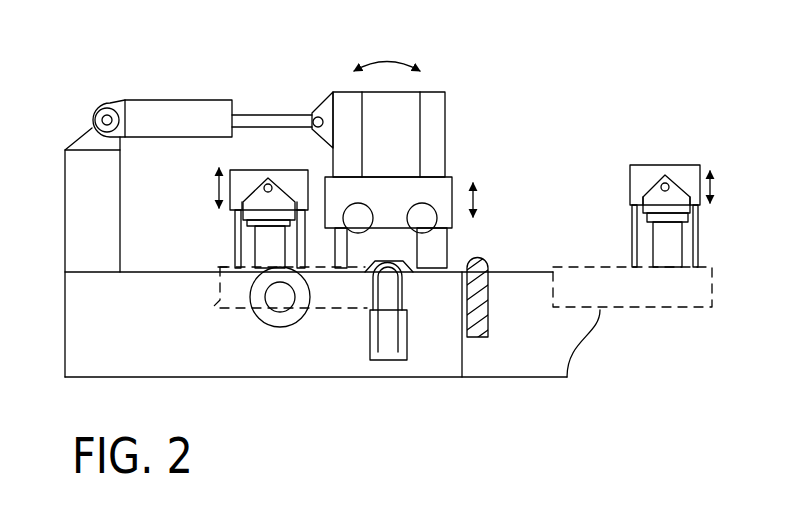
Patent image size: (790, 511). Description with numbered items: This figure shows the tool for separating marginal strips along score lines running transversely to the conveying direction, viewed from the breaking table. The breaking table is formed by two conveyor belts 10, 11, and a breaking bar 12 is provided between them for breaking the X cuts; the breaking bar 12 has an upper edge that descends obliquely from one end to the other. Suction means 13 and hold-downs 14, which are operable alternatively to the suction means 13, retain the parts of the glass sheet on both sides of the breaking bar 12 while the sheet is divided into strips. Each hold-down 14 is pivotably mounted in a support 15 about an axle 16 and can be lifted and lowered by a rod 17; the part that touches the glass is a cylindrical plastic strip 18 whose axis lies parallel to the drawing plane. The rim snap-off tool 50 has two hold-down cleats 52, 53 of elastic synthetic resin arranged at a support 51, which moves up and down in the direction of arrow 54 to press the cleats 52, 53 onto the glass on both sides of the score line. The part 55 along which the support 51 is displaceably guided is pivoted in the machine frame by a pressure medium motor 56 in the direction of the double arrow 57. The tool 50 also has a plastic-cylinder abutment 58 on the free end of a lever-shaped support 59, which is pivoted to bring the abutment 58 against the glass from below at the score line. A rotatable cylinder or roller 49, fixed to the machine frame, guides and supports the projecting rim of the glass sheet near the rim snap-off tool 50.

The conveyor belt 10 is at (75, 310).
The conveyor belt 11 is at (567, 376).
The breaking bar 12 is at (480, 340).
The suction means 13 is at (213, 300).
The hold-down 14 is at (248, 205).
The support 15 is at (228, 182).
The axle 16 is at (266, 183).
The rod 17 is at (240, 250).
The cylindrical plastic strip 18 is at (688, 222).
The rotatable cylinder or roller 49 is at (270, 326).
The rim snap-off tool 50 is at (439, 78).
The support 51 is at (440, 187).
The hold-down cleat 52 is at (357, 235).
The hold-down cleat 53 is at (431, 230).
The arrow 54 is at (477, 202).
The part of the rim snap-off tool 55 is at (373, 130).
The pressure medium motor 56 is at (191, 100).
The double arrow 57 is at (387, 60).
The abutment 58 is at (401, 280).
The lever-shaped support 59 is at (389, 343).